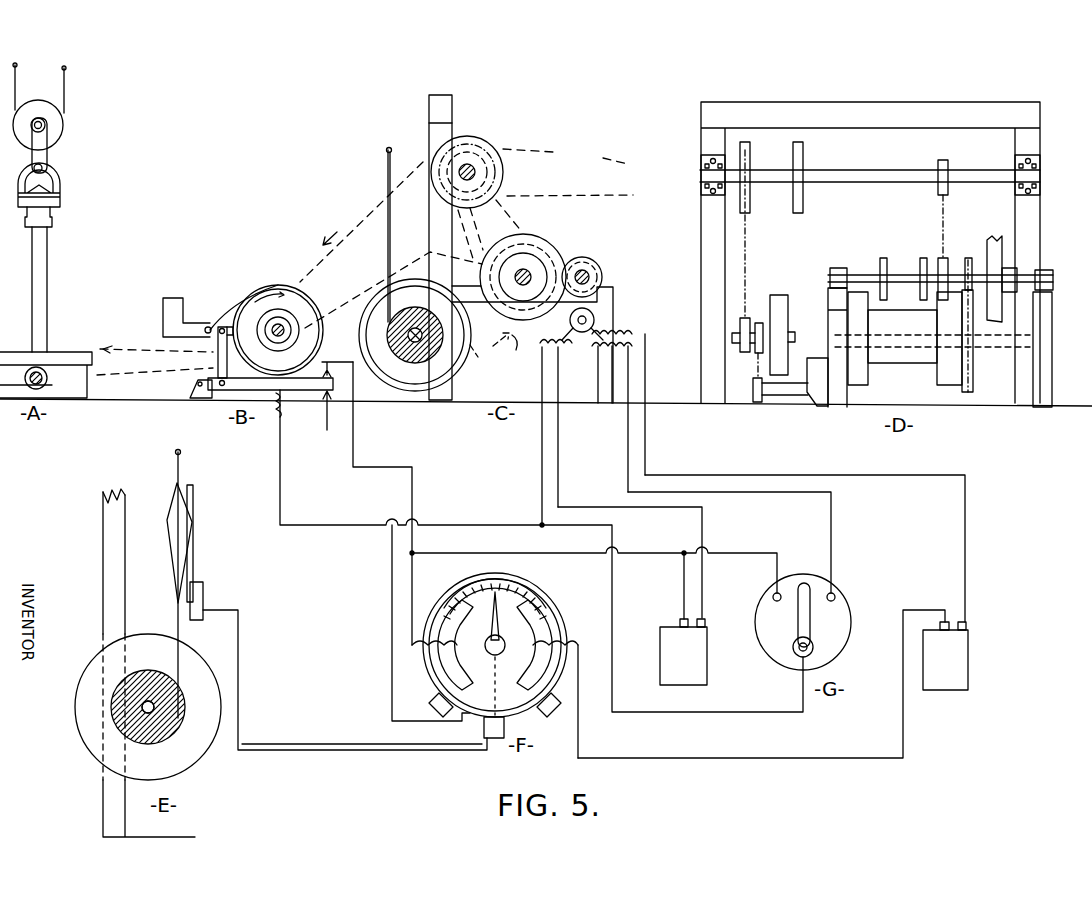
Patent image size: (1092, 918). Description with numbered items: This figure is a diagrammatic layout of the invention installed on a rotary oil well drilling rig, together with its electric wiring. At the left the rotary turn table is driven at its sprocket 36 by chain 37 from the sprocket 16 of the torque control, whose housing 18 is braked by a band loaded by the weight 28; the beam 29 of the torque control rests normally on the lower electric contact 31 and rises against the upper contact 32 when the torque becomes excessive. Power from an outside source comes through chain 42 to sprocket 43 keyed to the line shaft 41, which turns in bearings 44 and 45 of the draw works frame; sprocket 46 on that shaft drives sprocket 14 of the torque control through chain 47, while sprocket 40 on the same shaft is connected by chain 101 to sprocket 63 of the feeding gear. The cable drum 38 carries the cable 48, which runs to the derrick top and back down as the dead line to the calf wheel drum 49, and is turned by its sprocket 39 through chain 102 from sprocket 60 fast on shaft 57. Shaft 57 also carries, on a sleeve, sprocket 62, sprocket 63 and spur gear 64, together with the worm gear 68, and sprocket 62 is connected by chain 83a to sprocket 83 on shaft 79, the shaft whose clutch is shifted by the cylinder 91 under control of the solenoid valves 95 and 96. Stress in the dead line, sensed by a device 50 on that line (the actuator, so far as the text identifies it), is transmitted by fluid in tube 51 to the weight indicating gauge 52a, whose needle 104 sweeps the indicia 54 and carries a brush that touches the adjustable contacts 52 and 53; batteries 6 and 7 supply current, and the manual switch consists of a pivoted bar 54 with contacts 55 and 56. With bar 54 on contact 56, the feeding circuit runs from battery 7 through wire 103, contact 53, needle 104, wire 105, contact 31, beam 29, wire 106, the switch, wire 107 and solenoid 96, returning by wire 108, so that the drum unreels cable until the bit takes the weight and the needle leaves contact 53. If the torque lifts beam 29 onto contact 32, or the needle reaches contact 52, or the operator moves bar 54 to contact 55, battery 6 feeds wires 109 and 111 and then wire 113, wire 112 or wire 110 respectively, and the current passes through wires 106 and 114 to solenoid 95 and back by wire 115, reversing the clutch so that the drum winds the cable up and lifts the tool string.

The battery 6 is at (683, 652).
The battery 7 is at (945, 656).
The sprocket 14 is at (297, 330).
The sprocket 16 is at (290, 317).
The housing 18 is at (785, 312).
The weight 28 is at (183, 306).
The beam 29 is at (240, 386).
The lower electric contact 31 is at (334, 410).
The upper electric contact 32 is at (337, 374).
The sprocket 36 is at (45, 366).
The chain 37 is at (125, 385).
The cable drum 38 is at (428, 333).
The sprocket 39 is at (468, 366).
The sprocket 40 is at (488, 180).
The line shaft 41 is at (480, 172).
The chain 42 is at (566, 150).
The sprocket 43 is at (474, 152).
The bearing 44 is at (701, 158).
The bearing 45 is at (1040, 162).
The sprocket 46 is at (460, 152).
The chain 47 is at (372, 213).
The cable 48 is at (66, 93).
The calf wheel drum 49 is at (170, 722).
The contact block 50 is at (203, 588).
The tube 51 is at (238, 668).
The electric contact 52 is at (440, 672).
The weight indicating gauge 52a is at (545, 604).
The electric contact 53 is at (548, 672).
The indicia / pivoted bar 54 is at (500, 598).
The contact 55 is at (773, 597).
The contact 56 is at (835, 597).
The shaft 57 is at (855, 277).
The sprocket 60 is at (533, 260).
The sprocket 62 is at (882, 258).
The sprocket 63 is at (541, 266).
The spur gear 64 is at (922, 264).
The worm gear 68 is at (995, 240).
The shaft 79 is at (590, 281).
The sprocket 83 is at (590, 274).
The chain 83a is at (593, 262).
The cylinder 91 is at (593, 318).
The solenoid valve 95 is at (552, 341).
The solenoid valve 96 is at (597, 331).
The chain 101 is at (528, 216).
The chain 102 is at (498, 350).
The wire 103 is at (761, 684).
The indicating needle 104 is at (503, 640).
The wire 105 is at (419, 623).
The wire 106 is at (539, 555).
The wire 107 is at (729, 541).
The wire 108 is at (805, 541).
The wire 109 is at (669, 585).
The wire 110 is at (736, 546).
The wire 111 is at (593, 564).
The wire 112 is at (412, 592).
The wire 113 is at (382, 503).
The wire 114 is at (540, 483).
The wire 115 is at (566, 486).